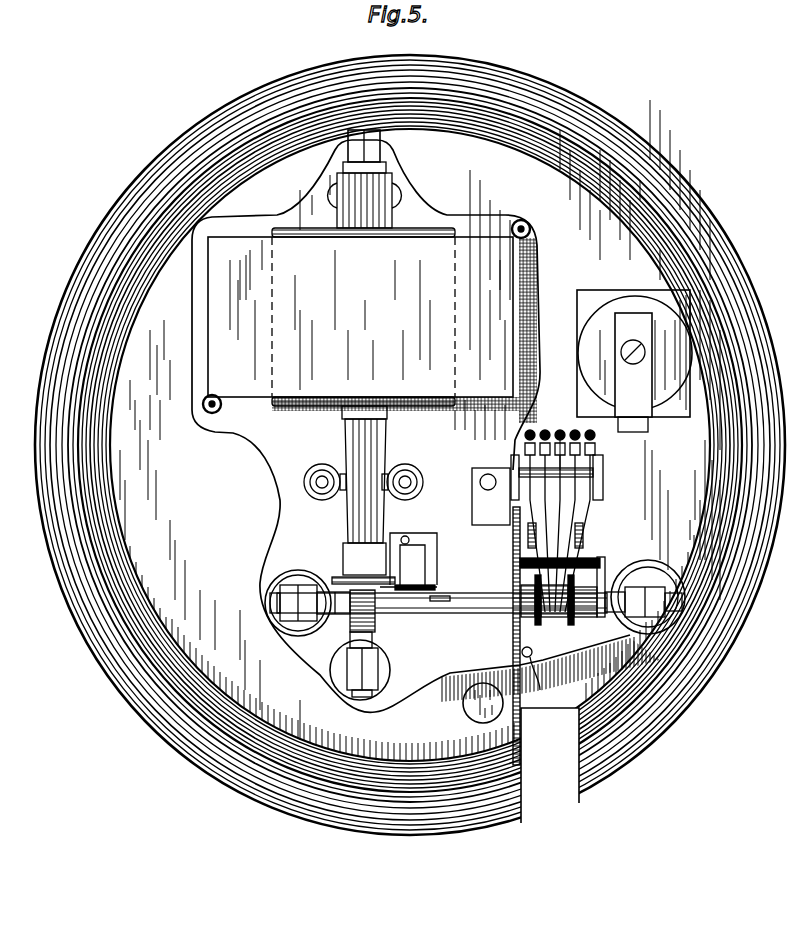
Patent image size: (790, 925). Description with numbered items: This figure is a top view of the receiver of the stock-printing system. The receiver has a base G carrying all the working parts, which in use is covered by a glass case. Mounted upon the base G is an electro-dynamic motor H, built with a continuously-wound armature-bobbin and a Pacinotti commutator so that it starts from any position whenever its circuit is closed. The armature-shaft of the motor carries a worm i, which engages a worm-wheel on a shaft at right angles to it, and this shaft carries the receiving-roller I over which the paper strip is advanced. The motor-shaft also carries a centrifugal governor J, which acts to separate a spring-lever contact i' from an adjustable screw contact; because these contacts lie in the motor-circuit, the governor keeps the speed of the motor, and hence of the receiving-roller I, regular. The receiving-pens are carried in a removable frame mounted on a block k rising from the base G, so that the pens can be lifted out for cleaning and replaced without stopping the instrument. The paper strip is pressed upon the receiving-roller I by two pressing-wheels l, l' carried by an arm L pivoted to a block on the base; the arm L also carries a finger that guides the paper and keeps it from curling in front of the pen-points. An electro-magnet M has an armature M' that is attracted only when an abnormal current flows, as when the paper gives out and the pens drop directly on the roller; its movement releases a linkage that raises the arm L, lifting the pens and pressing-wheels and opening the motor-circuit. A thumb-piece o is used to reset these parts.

The base G is at (410, 451).
The electro-dynamic motor H is at (360, 357).
The centrifugal governor J is at (363, 473).
The worm i is at (436, 635).
The spring-lever contact i' is at (408, 560).
The electro-magnet M is at (634, 353).
The armature M' is at (645, 375).
The block k is at (580, 514).
The arm L is at (496, 616).
The pressing-wheel l is at (531, 611).
The pressing-wheel l' is at (586, 604).
The receiving-roller I is at (554, 615).
The thumb-piece o is at (464, 706).